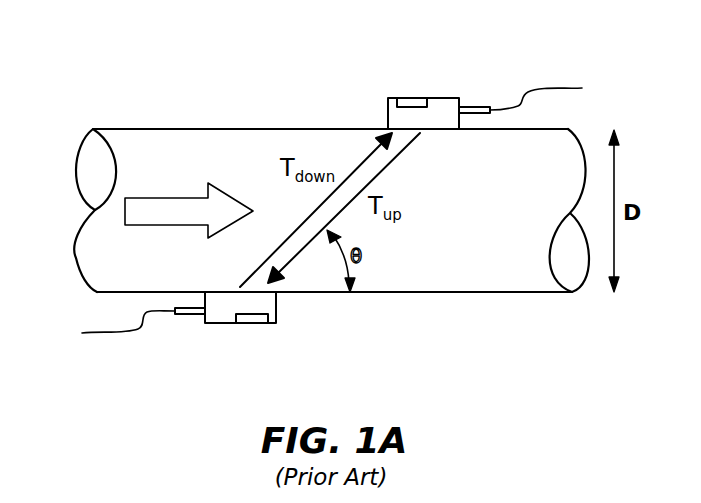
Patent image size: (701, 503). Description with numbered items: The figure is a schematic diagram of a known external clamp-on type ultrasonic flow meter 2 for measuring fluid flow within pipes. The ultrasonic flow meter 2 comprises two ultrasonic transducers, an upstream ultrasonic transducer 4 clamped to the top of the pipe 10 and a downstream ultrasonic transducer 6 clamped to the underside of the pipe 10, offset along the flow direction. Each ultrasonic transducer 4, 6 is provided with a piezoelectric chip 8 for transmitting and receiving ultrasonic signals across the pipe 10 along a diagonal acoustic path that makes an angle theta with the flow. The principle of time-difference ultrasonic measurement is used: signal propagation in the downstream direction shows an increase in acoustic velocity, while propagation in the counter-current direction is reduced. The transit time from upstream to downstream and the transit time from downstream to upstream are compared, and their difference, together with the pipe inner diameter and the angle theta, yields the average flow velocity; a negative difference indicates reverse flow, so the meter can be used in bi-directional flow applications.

The ultrasonic flow meter 2 is at (228, 50).
The upstream ultrasonic transducer 4 is at (442, 98).
The downstream ultrasonic transducer 6 is at (225, 323).
The piezoelectric chip 8 is at (412, 98).
The pipe 10 is at (488, 292).